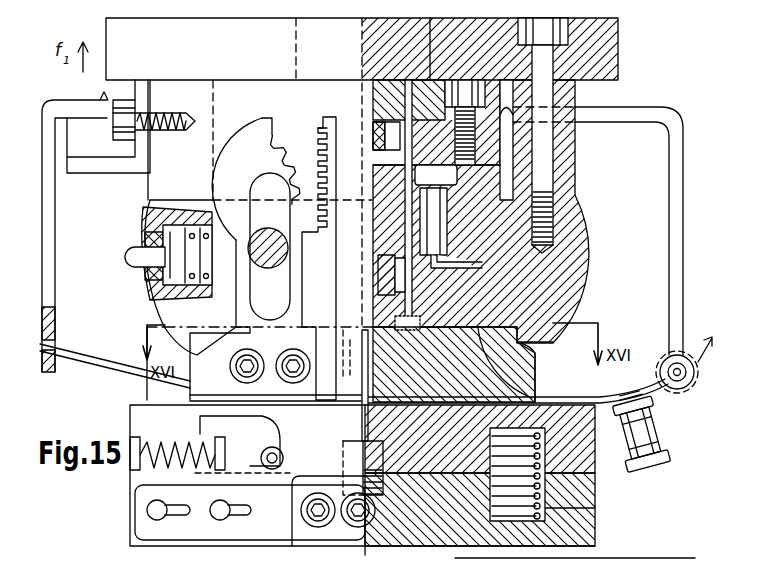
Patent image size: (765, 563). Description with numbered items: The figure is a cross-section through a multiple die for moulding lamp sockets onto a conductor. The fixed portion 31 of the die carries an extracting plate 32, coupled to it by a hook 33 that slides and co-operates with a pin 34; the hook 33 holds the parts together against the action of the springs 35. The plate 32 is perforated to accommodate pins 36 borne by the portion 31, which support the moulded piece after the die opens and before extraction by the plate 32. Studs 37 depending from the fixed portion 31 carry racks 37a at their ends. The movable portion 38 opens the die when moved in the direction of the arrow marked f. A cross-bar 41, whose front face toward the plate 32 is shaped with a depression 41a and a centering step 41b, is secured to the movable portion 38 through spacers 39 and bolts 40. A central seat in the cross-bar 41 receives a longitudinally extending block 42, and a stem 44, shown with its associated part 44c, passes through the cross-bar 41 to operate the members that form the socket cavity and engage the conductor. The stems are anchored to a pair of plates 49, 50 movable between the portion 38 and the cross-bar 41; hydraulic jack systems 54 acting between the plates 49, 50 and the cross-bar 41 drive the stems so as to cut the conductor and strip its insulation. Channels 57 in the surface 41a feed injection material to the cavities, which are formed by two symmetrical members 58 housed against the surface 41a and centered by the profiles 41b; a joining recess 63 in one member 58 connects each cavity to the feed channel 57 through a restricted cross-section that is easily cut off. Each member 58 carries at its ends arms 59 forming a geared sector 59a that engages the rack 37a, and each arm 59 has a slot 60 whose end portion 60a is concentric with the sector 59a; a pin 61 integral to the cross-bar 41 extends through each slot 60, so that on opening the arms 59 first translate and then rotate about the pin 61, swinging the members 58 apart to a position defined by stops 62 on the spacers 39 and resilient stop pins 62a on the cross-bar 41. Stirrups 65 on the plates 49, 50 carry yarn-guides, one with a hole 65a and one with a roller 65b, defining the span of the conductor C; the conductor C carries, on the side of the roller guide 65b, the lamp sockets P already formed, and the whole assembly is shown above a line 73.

The fixed portion 31 is at (583, 498).
The extracting plate 32 is at (585, 464).
The hook 33 is at (274, 434).
The roller 34 is at (284, 460).
The springs 35 is at (578, 512).
The pins 36 is at (362, 413).
The stud 37 is at (338, 287).
The rack 37a is at (323, 124).
The movable portion 38 is at (611, 63).
The spacers 39 is at (148, 192).
The bolts 40 is at (556, 228).
The cross-bar 41 is at (572, 270).
The depression 41a is at (525, 387).
The centering step 41b is at (536, 370).
The block 42 is at (386, 262).
The stem 44 is at (366, 205).
The shoulder 44c is at (546, 345).
The plate 49 is at (375, 77).
The plate 50 is at (482, 158).
The hydraulic jack systems 54 is at (468, 184).
The channels 57 is at (386, 322).
The symmetrical members 58 is at (412, 406).
The arms 59 is at (248, 318).
The geared sector 59a is at (282, 124).
The slot 60 is at (219, 202).
The slot end portion 60a is at (263, 173).
The pin 61 is at (273, 268).
The stops 62 is at (85, 157).
The resilient stop pins 62a is at (134, 256).
The joining recess 63 is at (450, 405).
The stirrups 65 is at (56, 247).
The hole yarn-guide 65a is at (60, 347).
The roller yarn-guide 65b is at (684, 389).
The base line 73 is at (672, 560).
The conductor C is at (100, 372).
The lamp sockets P is at (652, 460).